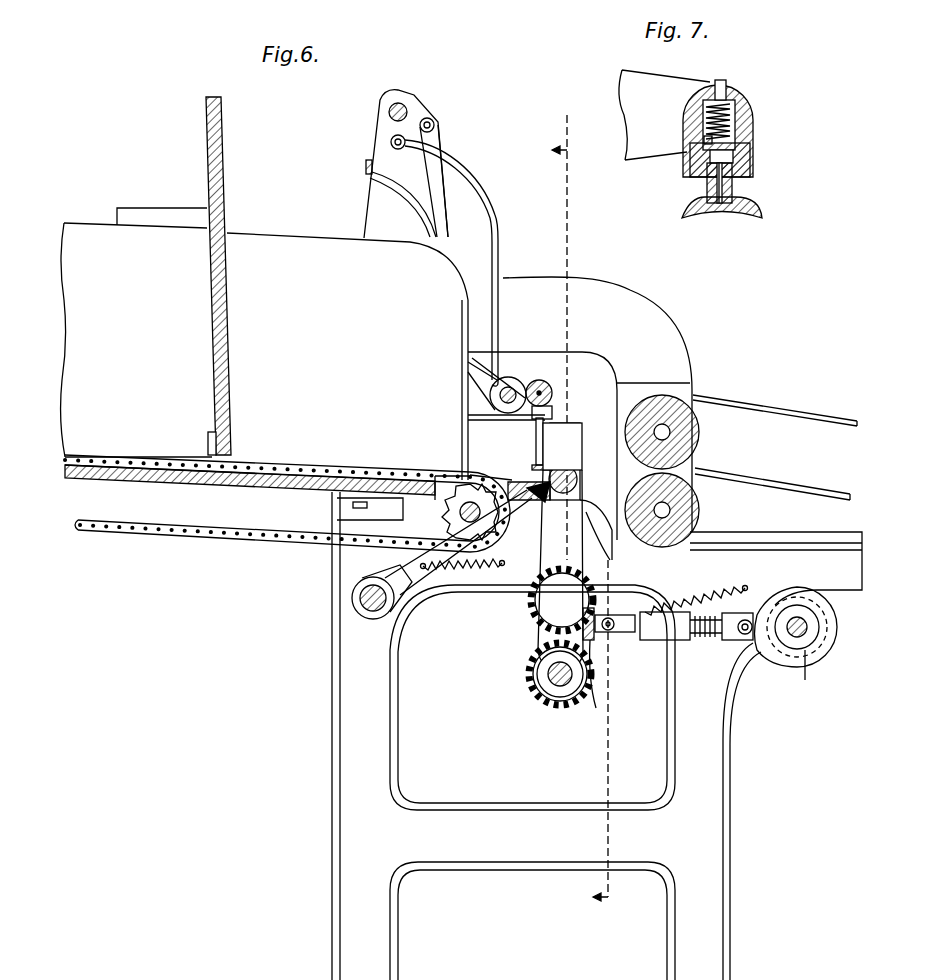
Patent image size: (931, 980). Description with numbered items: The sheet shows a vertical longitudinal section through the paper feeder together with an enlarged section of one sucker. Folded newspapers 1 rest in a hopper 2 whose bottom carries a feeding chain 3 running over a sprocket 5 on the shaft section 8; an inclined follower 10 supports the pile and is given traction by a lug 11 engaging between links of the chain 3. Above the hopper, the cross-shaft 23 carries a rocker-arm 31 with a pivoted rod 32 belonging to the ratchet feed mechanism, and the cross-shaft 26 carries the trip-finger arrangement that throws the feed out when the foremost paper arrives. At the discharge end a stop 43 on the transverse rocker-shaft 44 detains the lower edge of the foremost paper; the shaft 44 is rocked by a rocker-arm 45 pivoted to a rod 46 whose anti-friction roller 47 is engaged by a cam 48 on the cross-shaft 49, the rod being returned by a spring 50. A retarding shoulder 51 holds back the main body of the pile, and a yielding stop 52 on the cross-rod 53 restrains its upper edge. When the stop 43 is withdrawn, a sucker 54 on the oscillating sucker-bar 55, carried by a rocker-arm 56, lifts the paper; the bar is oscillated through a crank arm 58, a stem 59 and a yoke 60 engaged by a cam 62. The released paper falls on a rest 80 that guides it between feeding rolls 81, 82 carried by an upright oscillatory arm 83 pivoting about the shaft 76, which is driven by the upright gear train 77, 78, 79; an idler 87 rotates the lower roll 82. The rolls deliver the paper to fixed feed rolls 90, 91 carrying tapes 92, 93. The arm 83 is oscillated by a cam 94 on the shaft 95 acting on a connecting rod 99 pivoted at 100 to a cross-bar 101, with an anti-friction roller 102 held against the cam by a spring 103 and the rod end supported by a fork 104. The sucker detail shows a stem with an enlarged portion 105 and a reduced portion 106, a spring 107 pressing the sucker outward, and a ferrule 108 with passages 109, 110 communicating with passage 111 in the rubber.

In FIG. 6, the papers 1 is at (93, 232).
In FIG. 6, the hopper 2 is at (124, 480).
In FIG. 6, the feeding chain 3 is at (156, 526).
In FIG. 6, the sprocket 5 is at (528, 509).
In FIG. 6, the shaft section 8 is at (460, 512).
In FIG. 6, the follower 10 is at (206, 162).
In FIG. 6, the lug 11 is at (190, 385).
In FIG. 6, the cross-shaft 23 is at (400, 104).
In FIG. 6, the cross-shaft 26 is at (390, 142).
In FIG. 6, the rocker-arm 31 is at (430, 118).
In FIG. 6, the pivoted rod 32 is at (438, 186).
In FIG. 6, the stop 43 is at (515, 482).
In FIG. 6, the rocker-shaft 44 is at (475, 535).
In FIG. 6, the rocker-arm 45 is at (540, 500).
In FIG. 6, the rod 46 is at (428, 556).
In FIG. 6, the anti-friction roller 47 is at (478, 196).
In FIG. 6, the cam 48 is at (395, 598).
In FIG. 6, the cross-shaft 49 is at (337, 590).
In FIG. 6, the spring 50 is at (470, 570).
In FIG. 6, the retarding shoulder 51 is at (484, 470).
In FIG. 6, the yielding stop 52 is at (430, 236).
In FIG. 6, the cross-rod 53 is at (366, 168).
In FIG. 6, the sucker 54 is at (533, 466).
In FIG. 7, the sucker 54 is at (733, 215).
In FIG. 6, the sucker-bar 55 is at (548, 383).
In FIG. 7, the sucker-bar 55 is at (745, 100).
In FIG. 7, the rocker-arm 56 is at (680, 84).
In FIG. 6, the crank arm 58 is at (512, 376).
In FIG. 6, the stem 59 is at (497, 433).
In FIG. 6, the yoke 60 is at (592, 510).
In FIG. 6, the cam 62 is at (600, 540).
In FIG. 6, the shaft 76 is at (540, 700).
In FIG. 6, the gear 77 is at (545, 600).
In FIG. 6, the gear 78 is at (545, 630).
In FIG. 6, the gear 79 is at (548, 680).
In FIG. 6, the rest 80 is at (582, 446).
In FIG. 6, the feeding roll 81 is at (577, 448).
In FIG. 6, the feeding roll 82 is at (576, 476).
In FIG. 6, the oscillatory arm 83 is at (556, 554).
In FIG. 6, the idler 87 is at (573, 406).
In FIG. 6, the fixed feed roll 90 is at (700, 440).
In FIG. 6, the fixed feed roll 91 is at (700, 504).
In FIG. 6, the tape 92 is at (843, 420).
In FIG. 6, the tape 93 is at (803, 545).
In FIG. 6, the cam 94 is at (775, 655).
In FIG. 6, the shaft 95 is at (805, 630).
In FIG. 6, the connecting rod 99 is at (706, 640).
In FIG. 6, the pivot 100 is at (614, 632).
In FIG. 6, the cross-bar 101 is at (634, 728).
In FIG. 6, the anti-friction roller 102 is at (748, 620).
In FIG. 6, the spring 103 is at (696, 588).
In FIG. 6, the fork 104 is at (800, 676).
In FIG. 6, the enlarged portion 105 is at (548, 420).
In FIG. 7, the enlarged portion 105 is at (707, 188).
In FIG. 7, the reduced portion 106 is at (722, 82).
In FIG. 7, the spring 107 is at (735, 122).
In FIG. 6, the ferrule 108 is at (542, 412).
In FIG. 7, the ferrule 108 is at (738, 155).
In FIG. 7, the passage 109 is at (710, 158).
In FIG. 7, the passage 110 is at (700, 140).
In FIG. 7, the passage 111 is at (740, 190).